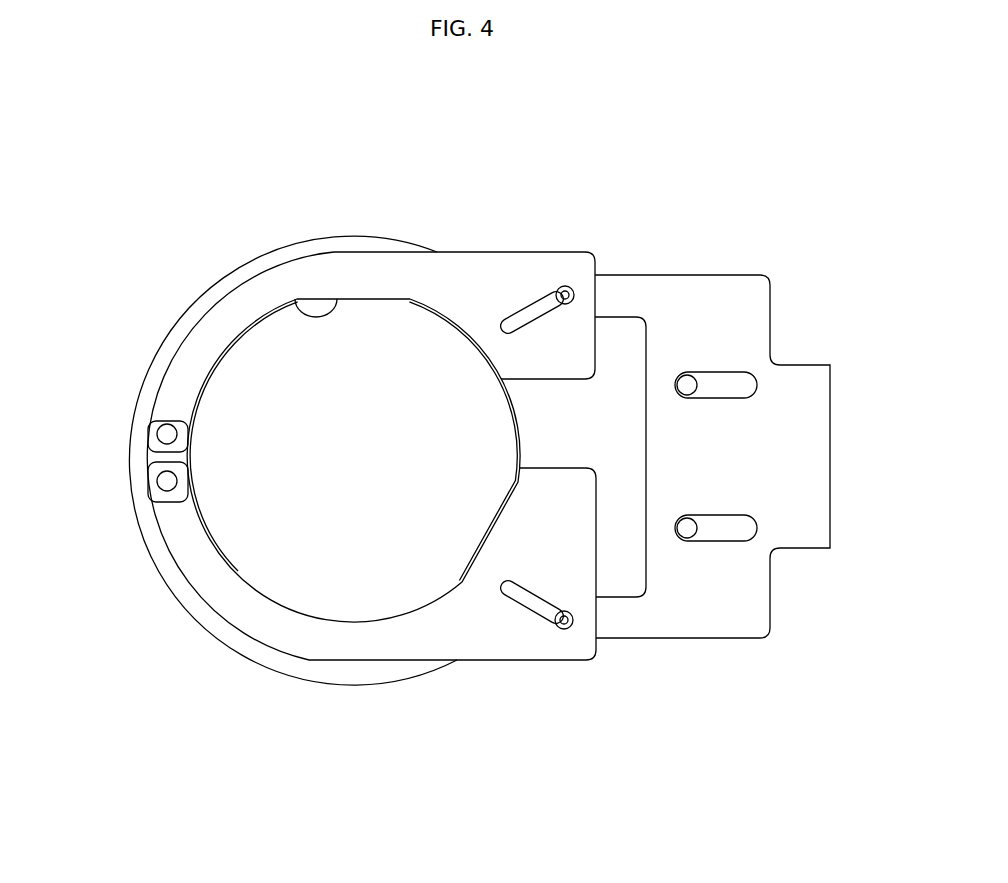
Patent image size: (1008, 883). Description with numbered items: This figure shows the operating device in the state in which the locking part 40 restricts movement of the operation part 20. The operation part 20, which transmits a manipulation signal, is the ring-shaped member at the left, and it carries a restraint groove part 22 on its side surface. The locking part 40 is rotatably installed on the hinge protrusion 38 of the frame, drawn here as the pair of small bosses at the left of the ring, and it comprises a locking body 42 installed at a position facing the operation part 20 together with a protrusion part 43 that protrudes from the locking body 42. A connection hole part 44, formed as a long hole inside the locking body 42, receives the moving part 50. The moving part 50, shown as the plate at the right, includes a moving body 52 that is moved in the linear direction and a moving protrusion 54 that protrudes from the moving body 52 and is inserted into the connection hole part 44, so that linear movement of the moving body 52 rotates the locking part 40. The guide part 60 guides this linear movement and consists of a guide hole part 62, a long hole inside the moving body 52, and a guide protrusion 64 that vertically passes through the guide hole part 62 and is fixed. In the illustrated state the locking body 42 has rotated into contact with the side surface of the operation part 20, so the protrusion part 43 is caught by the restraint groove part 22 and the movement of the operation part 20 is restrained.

The operation part 20 is at (358, 320).
The restraint groove part 22 is at (247, 548).
The hinge protrusion 38 is at (172, 432).
The locking part 40 is at (541, 240).
The locking body 42 is at (245, 305).
The protrusion part 43 is at (293, 303).
The connection hole part 44 is at (527, 320).
The moving part 50 is at (790, 299).
The moving body 52 is at (702, 298).
The moving protrusion 54 is at (566, 292).
The guide part 60 is at (726, 562).
The guide hole part 62 is at (725, 542).
The guide protrusion 64 is at (687, 528).